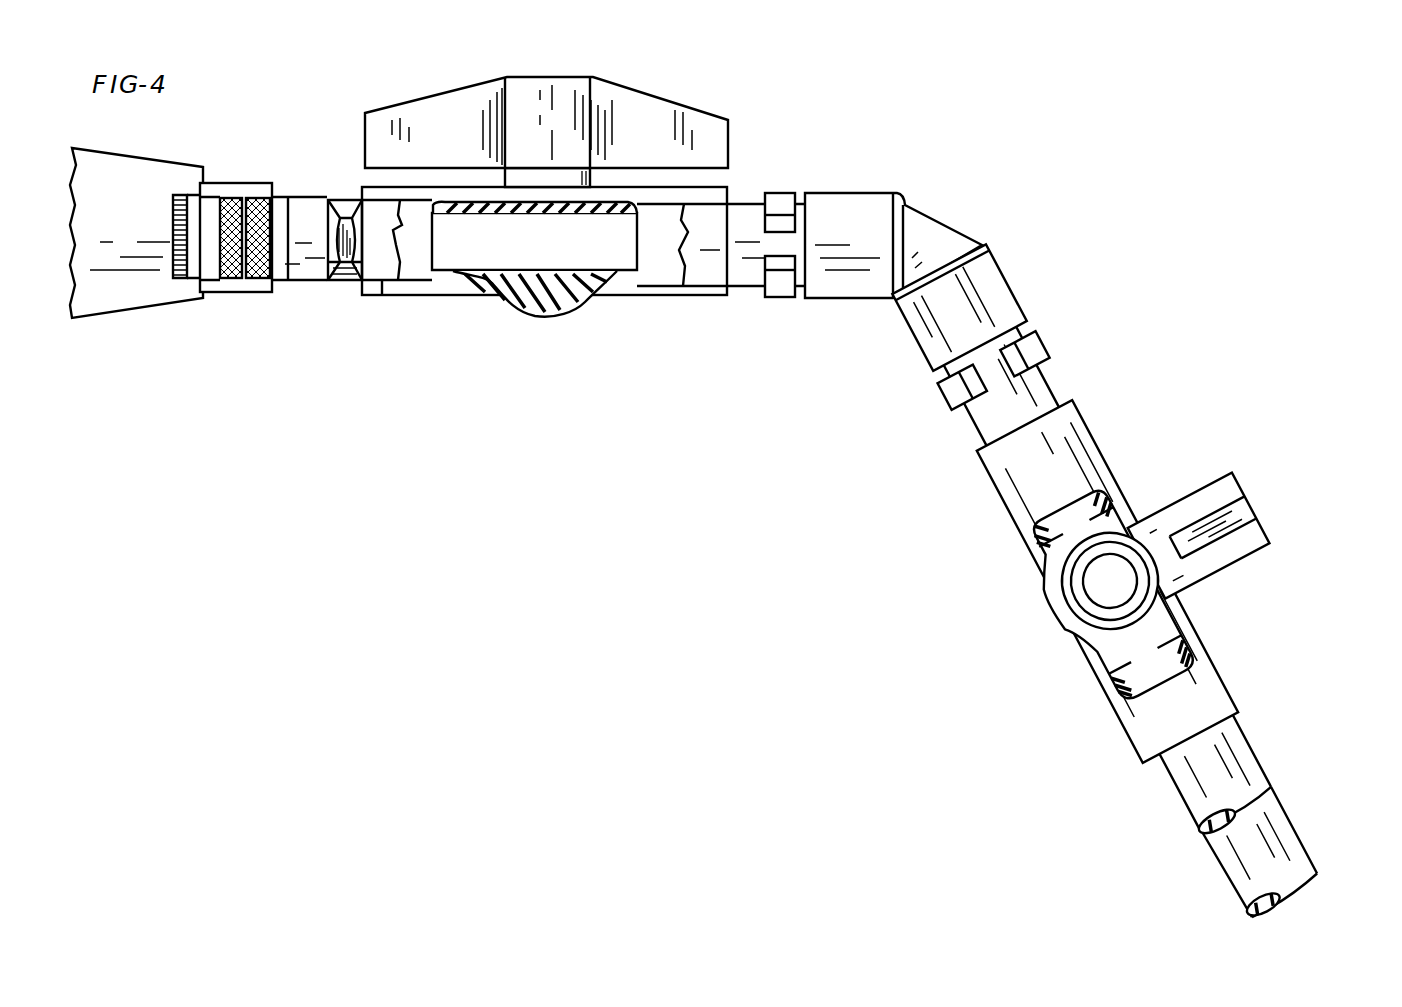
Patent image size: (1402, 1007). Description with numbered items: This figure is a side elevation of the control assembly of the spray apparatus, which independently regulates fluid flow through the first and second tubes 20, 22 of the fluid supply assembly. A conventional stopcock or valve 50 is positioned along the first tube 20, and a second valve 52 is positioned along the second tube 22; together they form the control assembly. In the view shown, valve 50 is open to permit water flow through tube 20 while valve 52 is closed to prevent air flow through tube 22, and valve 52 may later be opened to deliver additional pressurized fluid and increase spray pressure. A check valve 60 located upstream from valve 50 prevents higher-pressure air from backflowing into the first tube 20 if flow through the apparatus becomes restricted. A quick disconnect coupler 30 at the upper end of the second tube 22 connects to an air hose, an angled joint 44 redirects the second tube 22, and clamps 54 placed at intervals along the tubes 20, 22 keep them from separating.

The first tube 20 is at (1297, 833).
The second tube 22 is at (382, 282).
The second coupler 30 is at (233, 283).
The angled joint 44 is at (940, 214).
The valve 50 is at (682, 103).
The valve 52 is at (1274, 523).
The clamps 54 is at (783, 298).
The check valve 60 is at (137, 318).